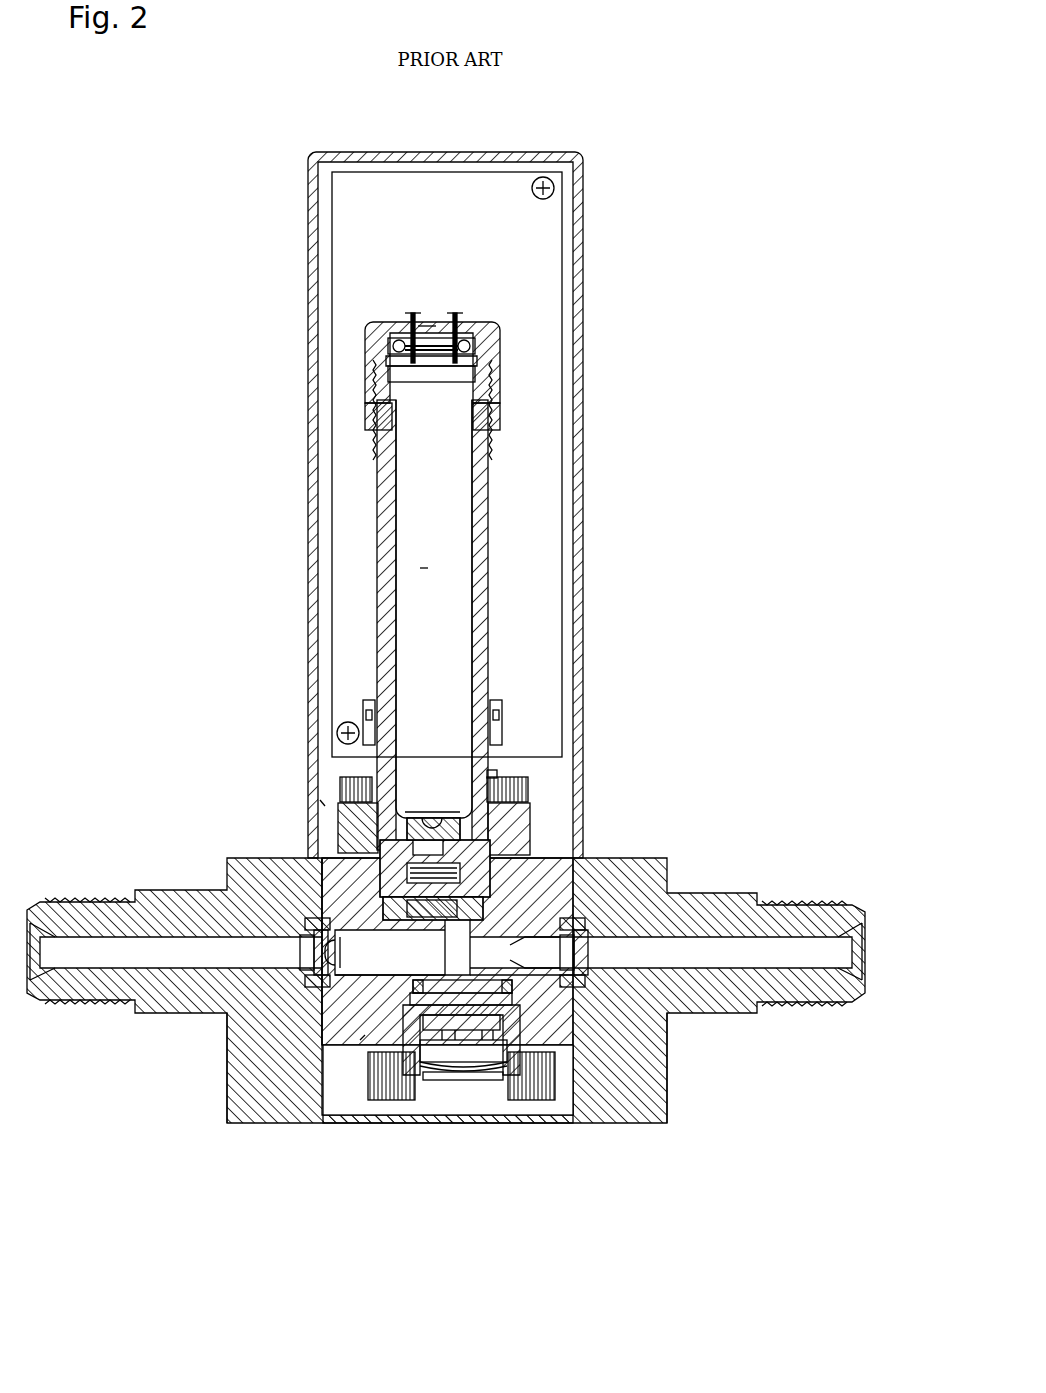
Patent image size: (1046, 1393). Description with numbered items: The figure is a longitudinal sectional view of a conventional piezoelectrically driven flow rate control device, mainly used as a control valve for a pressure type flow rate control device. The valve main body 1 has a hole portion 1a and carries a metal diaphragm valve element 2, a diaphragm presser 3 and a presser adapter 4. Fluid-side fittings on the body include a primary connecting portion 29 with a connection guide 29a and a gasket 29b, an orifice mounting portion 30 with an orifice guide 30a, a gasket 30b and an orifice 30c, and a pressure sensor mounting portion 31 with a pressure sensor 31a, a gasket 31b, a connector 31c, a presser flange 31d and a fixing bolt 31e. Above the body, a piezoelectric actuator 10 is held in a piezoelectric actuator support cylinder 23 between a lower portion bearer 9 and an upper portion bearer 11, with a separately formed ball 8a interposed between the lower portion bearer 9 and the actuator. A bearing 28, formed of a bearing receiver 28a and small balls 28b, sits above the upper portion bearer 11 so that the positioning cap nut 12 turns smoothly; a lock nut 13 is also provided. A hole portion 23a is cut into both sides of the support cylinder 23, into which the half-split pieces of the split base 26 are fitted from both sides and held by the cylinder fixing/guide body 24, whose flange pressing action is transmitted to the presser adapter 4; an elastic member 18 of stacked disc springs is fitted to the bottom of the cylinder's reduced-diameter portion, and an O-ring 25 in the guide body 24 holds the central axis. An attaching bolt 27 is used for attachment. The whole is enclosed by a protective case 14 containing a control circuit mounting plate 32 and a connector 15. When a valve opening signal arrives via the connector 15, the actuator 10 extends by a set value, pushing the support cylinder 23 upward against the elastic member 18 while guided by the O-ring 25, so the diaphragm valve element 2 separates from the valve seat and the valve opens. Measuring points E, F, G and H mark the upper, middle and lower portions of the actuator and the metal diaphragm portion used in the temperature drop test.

The valve main body 1 is at (150, 888).
The hole portion 1a is at (335, 858).
The metal diaphragm valve element 2 is at (449, 957).
The diaphragm presser 3 is at (393, 960).
The presser adapter 4 is at (565, 913).
The ball 8a is at (432, 820).
The lower portion bearer 9 is at (425, 810).
The piezoelectric actuator 10 is at (445, 518).
The upper portion bearer 11 is at (418, 370).
The positioning cap nut 12 is at (372, 345).
The lock nut 13 is at (368, 415).
The protective case 14 is at (583, 222).
The connector 15 is at (428, 325).
The elastic member 18 is at (365, 830).
The piezoelectric actuator support cylinder 23 is at (482, 570).
The hole portion 23a is at (345, 807).
The cylinder fixing/guide body 24 is at (496, 748).
The O-ring 25 is at (500, 712).
The split base 26 is at (502, 845).
The attaching bolt 27 is at (528, 788).
The bearing 28 is at (500, 348).
The bearing receiver 28a is at (462, 390).
The small balls 28b is at (462, 340).
The primary connecting portion 29 is at (295, 985).
The connection guide 29a is at (320, 920).
The gasket 29b is at (300, 950).
The orifice mounting portion 30 is at (595, 983).
The orifice guide 30a is at (585, 935).
The gasket 30b is at (618, 1123).
The orifice 30c is at (590, 950).
The pressure sensor mounting portion 31 is at (458, 1094).
The pressure sensor 31a is at (490, 1082).
The gasket 31b is at (532, 1100).
The connector 31c is at (428, 1075).
The presser flange 31d is at (337, 1085).
The fixing bolt 31e is at (375, 1095).
The control circuit mounting plate 32 is at (548, 290).
The measuring point E is at (425, 330).
The measuring point F is at (425, 570).
The measuring point G is at (320, 800).
The measuring point H is at (360, 1040).